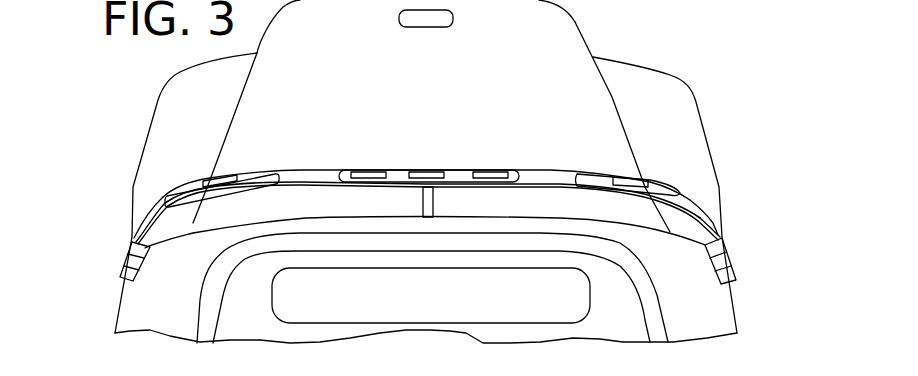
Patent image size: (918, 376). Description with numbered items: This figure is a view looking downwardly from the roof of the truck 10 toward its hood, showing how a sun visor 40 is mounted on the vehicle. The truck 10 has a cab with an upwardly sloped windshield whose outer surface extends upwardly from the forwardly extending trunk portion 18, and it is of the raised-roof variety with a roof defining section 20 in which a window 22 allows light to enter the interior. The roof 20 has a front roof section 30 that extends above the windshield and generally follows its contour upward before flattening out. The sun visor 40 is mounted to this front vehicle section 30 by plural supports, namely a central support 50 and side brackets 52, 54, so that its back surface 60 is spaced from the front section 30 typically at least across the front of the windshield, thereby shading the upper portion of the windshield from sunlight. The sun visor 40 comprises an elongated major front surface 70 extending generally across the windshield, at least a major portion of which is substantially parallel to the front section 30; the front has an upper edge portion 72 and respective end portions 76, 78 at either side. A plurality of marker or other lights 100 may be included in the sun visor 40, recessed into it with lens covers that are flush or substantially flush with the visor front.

The truck 10 is at (716, 140).
The trunk portion 18 is at (599, 127).
The roof defining section 20 is at (622, 307).
The window 22 is at (399, 303).
The front roof section 30 is at (300, 203).
The sun visor 40 is at (712, 223).
The central support 50 is at (434, 203).
The side bracket 52 is at (130, 280).
The side bracket 54 is at (733, 280).
The back surface 60 is at (308, 187).
The front surface 70 is at (551, 177).
The upper edge portion 72 is at (519, 188).
The end portion 76 is at (723, 237).
The end portion 78 is at (133, 230).
The lights 100 is at (421, 173).